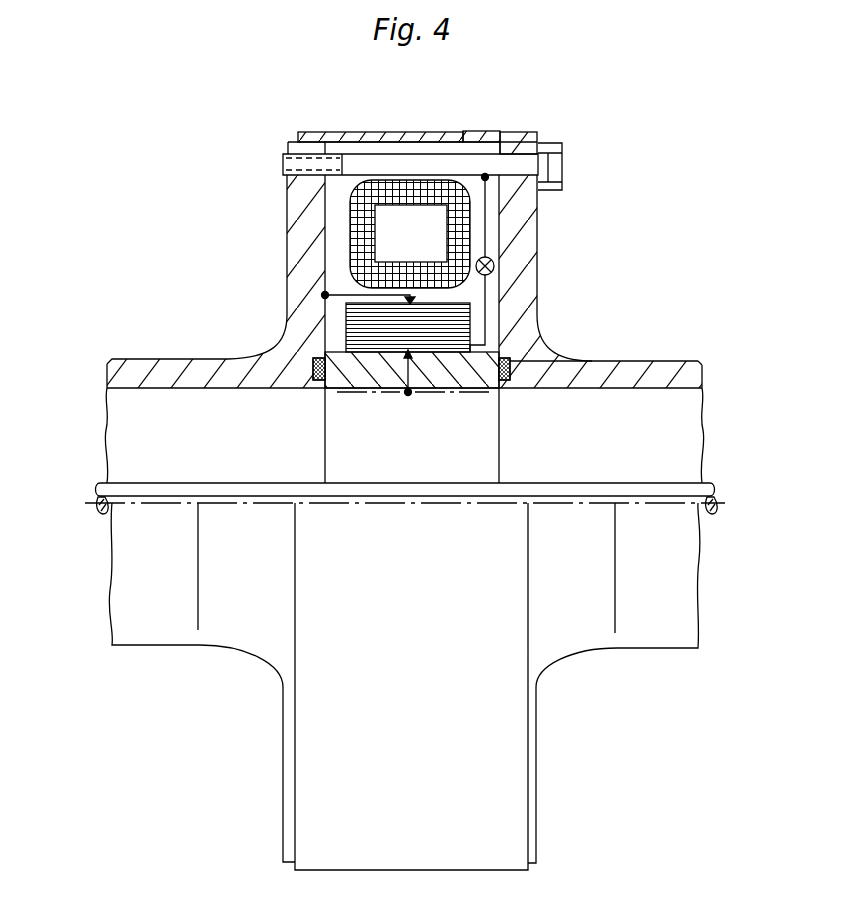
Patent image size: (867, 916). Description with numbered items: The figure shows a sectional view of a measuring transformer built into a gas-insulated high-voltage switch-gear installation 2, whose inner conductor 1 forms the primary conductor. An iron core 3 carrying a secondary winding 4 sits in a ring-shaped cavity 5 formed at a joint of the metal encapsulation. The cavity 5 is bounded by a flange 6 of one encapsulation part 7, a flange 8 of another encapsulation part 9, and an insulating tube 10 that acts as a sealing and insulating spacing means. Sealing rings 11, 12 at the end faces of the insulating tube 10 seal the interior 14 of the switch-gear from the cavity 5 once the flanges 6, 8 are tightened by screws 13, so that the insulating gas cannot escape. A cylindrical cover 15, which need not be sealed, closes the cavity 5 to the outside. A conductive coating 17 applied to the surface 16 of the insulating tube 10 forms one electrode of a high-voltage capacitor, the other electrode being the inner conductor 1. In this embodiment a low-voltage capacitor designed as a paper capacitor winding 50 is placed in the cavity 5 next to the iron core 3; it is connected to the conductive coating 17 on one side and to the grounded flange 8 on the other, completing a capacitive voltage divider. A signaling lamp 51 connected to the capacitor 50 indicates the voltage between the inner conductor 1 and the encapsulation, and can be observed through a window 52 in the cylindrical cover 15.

The inner conductor 1 is at (687, 490).
The high-voltage switch-gear installation 2 is at (670, 400).
The iron core 3 is at (395, 225).
The secondary winding 4 is at (437, 190).
The ring-shaped cavity 5 is at (535, 312).
The flange 6 is at (522, 221).
The part of the metal encapsulation 7 is at (643, 372).
The flange 8 is at (305, 200).
The part of the metal encapsulation 9 is at (140, 375).
The insulating tube 10 is at (506, 356).
The sealing ring 11 is at (548, 358).
The sealing ring 12 is at (315, 363).
The screws 13 is at (423, 163).
The interior 14 is at (690, 428).
The cylindrical cover 15 is at (323, 138).
The surface 16 is at (493, 393).
The conductive coating 17 is at (354, 393).
The paper capacitor winding 50 is at (425, 328).
The signaling lamp 51 is at (495, 264).
The window 52 is at (480, 138).